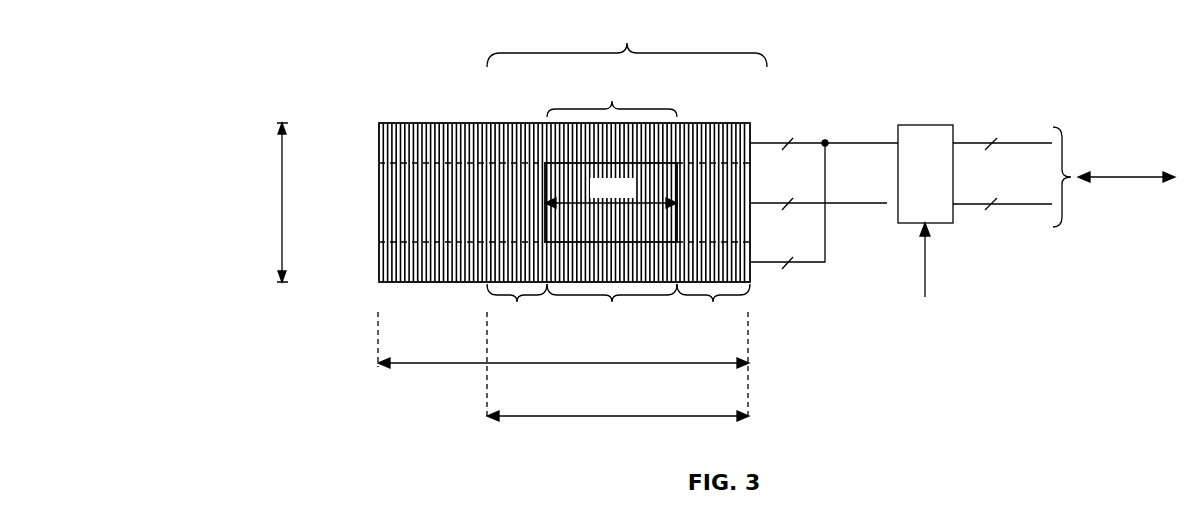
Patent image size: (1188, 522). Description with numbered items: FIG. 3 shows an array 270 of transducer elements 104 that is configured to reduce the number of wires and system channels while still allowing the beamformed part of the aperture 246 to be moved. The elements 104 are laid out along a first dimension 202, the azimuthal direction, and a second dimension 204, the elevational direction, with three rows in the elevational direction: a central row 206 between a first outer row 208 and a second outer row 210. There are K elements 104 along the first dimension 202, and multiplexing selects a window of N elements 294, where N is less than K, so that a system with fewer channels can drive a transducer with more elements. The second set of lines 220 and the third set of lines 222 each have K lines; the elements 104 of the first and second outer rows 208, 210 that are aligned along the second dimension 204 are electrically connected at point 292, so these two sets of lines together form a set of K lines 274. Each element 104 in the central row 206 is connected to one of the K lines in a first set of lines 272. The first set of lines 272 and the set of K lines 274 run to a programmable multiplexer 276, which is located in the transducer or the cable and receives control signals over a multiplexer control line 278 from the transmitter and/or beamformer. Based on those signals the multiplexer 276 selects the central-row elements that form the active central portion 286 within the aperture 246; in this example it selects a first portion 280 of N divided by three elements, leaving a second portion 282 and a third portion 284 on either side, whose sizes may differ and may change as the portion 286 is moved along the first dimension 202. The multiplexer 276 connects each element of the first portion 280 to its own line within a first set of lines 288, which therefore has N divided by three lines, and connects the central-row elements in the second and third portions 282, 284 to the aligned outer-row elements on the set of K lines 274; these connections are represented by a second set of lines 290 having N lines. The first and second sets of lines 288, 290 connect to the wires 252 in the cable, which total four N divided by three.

The elements 104 is at (445, 127).
The first dimension 202 is at (430, 365).
The second dimension 204 is at (280, 203).
The central row 206 is at (377, 203).
The first outer row 208 is at (377, 145).
The second outer row 210 is at (377, 262).
The second set of lines 220 is at (815, 139).
The third set of lines 222 is at (815, 263).
The aperture 246 is at (627, 42).
The wires 252 is at (1125, 178).
The array 270 is at (706, 118).
The first set of lines 272 is at (858, 205).
The set of K lines 274 is at (880, 140).
The programmable multiplexer 276 is at (940, 223).
The multiplexer control line 278 is at (928, 258).
The first portion 280 is at (612, 308).
The second portion 282 is at (517, 308).
The third portion 284 is at (713, 308).
The portion 286 is at (611, 158).
The first set of lines 288 is at (1022, 205).
The second set of lines 290 is at (1020, 143).
The point 292 is at (826, 141).
The window of N elements 294 is at (675, 417).